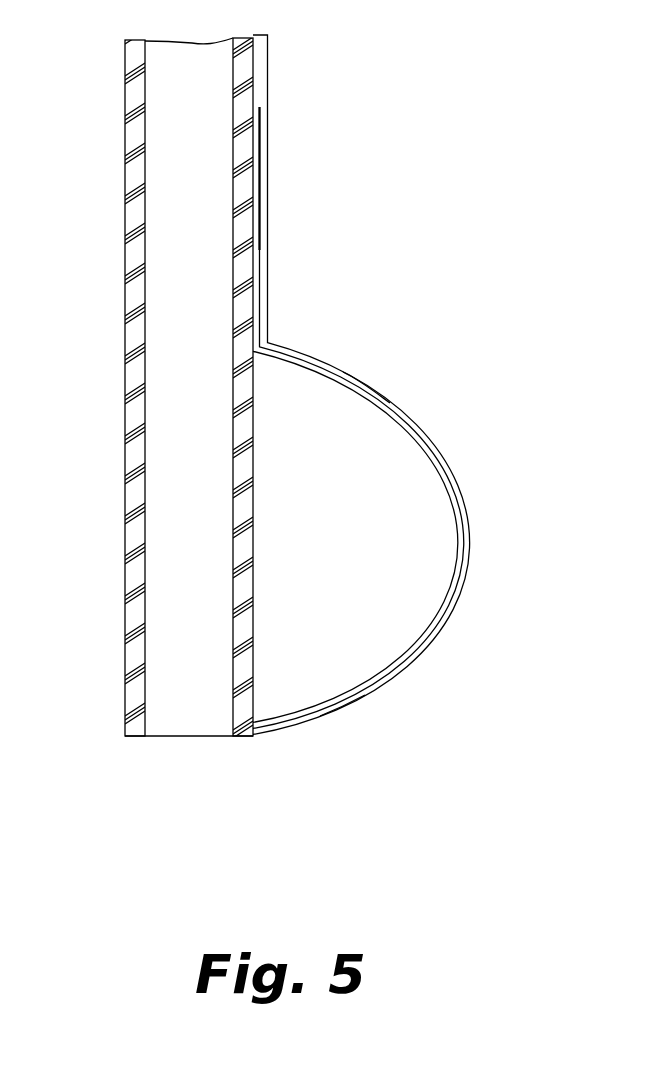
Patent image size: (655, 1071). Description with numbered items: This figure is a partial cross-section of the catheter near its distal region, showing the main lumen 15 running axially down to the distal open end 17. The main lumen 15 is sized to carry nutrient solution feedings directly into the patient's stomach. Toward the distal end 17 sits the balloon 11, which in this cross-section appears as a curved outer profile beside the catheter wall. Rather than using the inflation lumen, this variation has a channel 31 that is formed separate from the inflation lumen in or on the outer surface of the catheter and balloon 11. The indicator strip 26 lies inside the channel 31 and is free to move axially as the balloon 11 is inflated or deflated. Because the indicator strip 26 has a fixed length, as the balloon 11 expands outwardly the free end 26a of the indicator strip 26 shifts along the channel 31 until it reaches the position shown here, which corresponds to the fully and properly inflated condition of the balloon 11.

The main lumen 15 is at (145, 327).
The distal open end 17 is at (170, 737).
The indicator strip 26 is at (260, 234).
The free end 26a is at (260, 128).
The channel 31 is at (387, 398).
The balloon 11 is at (337, 697).